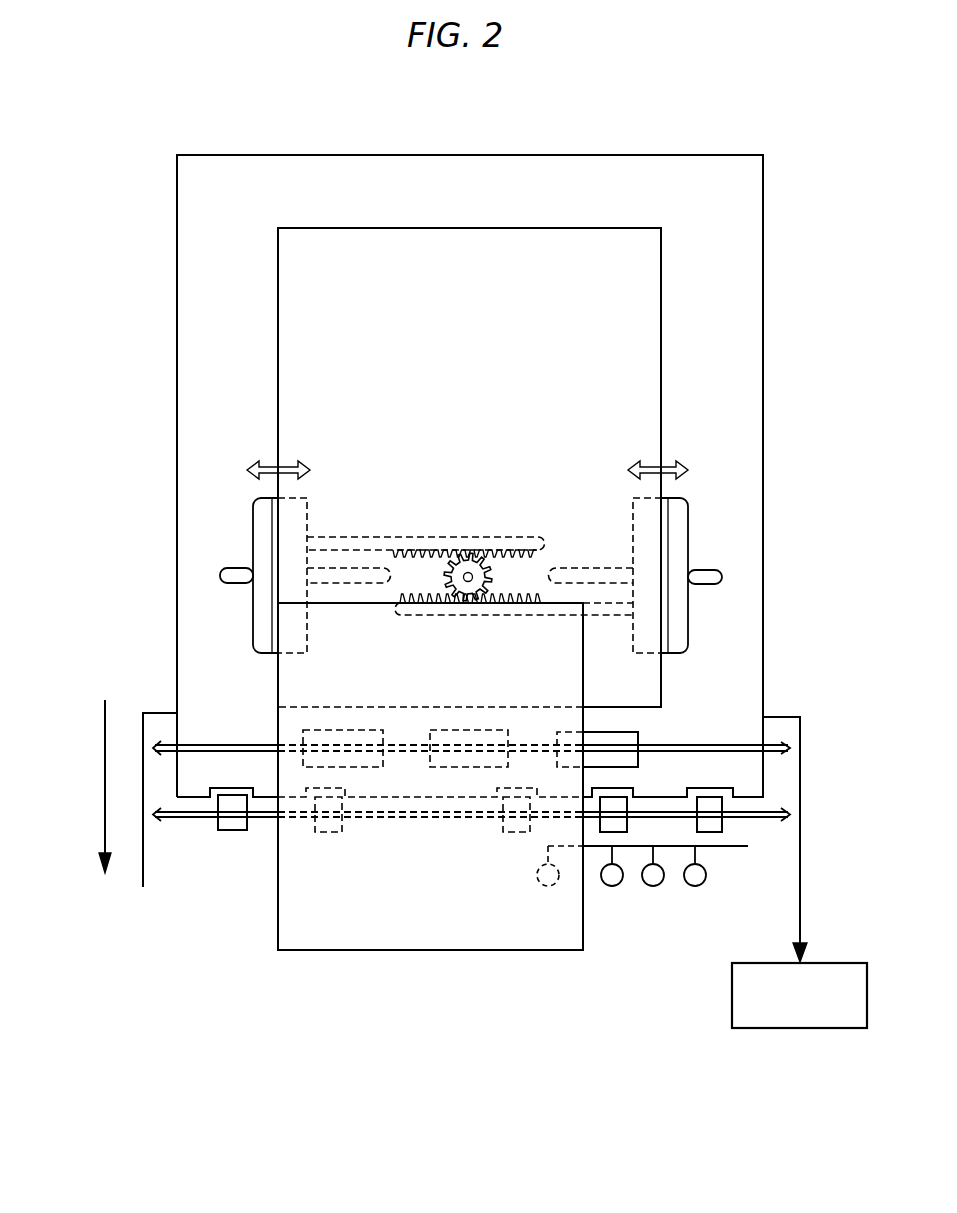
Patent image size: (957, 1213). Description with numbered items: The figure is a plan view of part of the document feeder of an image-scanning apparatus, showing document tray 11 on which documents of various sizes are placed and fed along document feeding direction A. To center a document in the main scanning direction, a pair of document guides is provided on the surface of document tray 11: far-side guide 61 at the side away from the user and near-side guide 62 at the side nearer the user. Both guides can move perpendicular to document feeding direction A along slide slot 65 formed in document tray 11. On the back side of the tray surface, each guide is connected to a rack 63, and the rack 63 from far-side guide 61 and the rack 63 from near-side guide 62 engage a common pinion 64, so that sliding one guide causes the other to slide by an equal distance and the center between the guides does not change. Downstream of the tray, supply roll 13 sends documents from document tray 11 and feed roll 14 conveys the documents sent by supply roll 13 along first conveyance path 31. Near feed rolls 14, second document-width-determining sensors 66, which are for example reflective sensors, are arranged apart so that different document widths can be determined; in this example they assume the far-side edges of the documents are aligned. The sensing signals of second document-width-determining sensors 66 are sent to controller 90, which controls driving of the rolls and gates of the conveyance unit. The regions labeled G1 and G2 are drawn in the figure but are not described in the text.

The document tray 11 is at (745, 381).
The first glass substrate G1 is at (641, 283).
The second glass substrate G2 is at (293, 922).
The far-side guide 61 is at (262, 522).
The near-side guide 62 is at (677, 525).
The rack 63 is at (355, 540).
The pinion 64 is at (487, 577).
The slide slot 65 is at (238, 583).
The supply roll 13 is at (620, 735).
The feed roll 14 is at (230, 832).
The first conveyance path 31 is at (783, 861).
The second document-width-determining sensors 66 is at (540, 880).
The controller 90 is at (730, 986).
The document feeding direction A is at (103, 776).